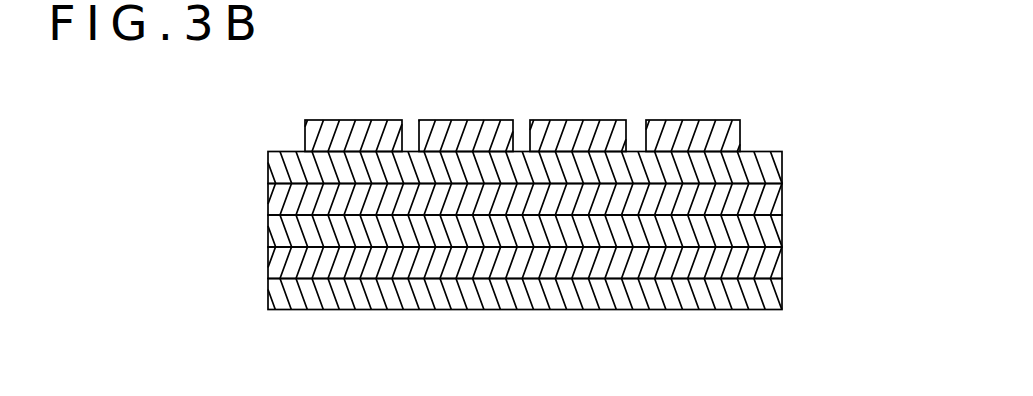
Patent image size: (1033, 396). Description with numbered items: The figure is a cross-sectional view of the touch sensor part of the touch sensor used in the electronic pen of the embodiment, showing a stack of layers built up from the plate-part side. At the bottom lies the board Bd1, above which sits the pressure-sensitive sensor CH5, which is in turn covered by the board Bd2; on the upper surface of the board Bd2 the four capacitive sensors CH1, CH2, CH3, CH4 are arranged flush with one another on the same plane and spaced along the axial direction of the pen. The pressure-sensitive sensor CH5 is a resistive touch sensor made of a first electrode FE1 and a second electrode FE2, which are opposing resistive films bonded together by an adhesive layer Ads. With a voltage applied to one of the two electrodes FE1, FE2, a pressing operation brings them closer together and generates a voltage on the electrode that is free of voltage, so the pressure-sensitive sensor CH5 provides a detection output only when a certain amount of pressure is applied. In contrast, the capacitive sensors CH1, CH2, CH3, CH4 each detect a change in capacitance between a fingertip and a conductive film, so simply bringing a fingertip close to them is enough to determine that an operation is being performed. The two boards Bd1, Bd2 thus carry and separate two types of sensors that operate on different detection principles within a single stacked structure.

The capacitive sensor CH1 is at (352, 120).
The capacitive sensor CH2 is at (460, 120).
The capacitive sensor CH3 is at (588, 120).
The capacitive sensor CH4 is at (687, 120).
The pressure-sensitive sensor CH5 is at (533, 231).
The board Bd2 is at (773, 176).
The board Bd1 is at (774, 285).
The second electrode FE2 is at (270, 203).
The first electrode FE1 is at (270, 260).
The adhesive layer Ads is at (270, 228).